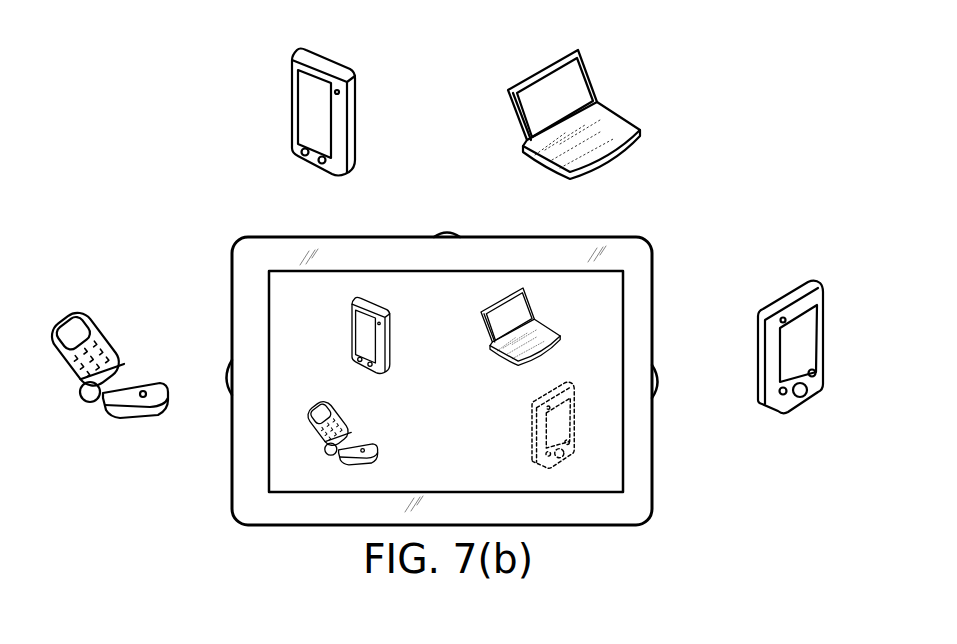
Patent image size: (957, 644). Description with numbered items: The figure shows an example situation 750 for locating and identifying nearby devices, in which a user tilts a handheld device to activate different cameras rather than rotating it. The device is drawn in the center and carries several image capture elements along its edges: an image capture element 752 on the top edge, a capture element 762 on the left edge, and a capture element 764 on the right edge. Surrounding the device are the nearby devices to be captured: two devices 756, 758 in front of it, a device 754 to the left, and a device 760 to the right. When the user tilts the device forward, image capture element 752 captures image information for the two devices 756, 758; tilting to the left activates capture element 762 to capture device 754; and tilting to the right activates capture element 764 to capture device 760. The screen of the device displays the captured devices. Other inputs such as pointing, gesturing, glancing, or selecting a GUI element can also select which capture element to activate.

The situation 750 is at (782, 97).
The image capture element 752 is at (447, 238).
The device 754 is at (108, 316).
The device 756 is at (288, 107).
The device 758 is at (510, 120).
The device 760 is at (762, 347).
The capture element 762 is at (223, 385).
The capture element 764 is at (653, 397).